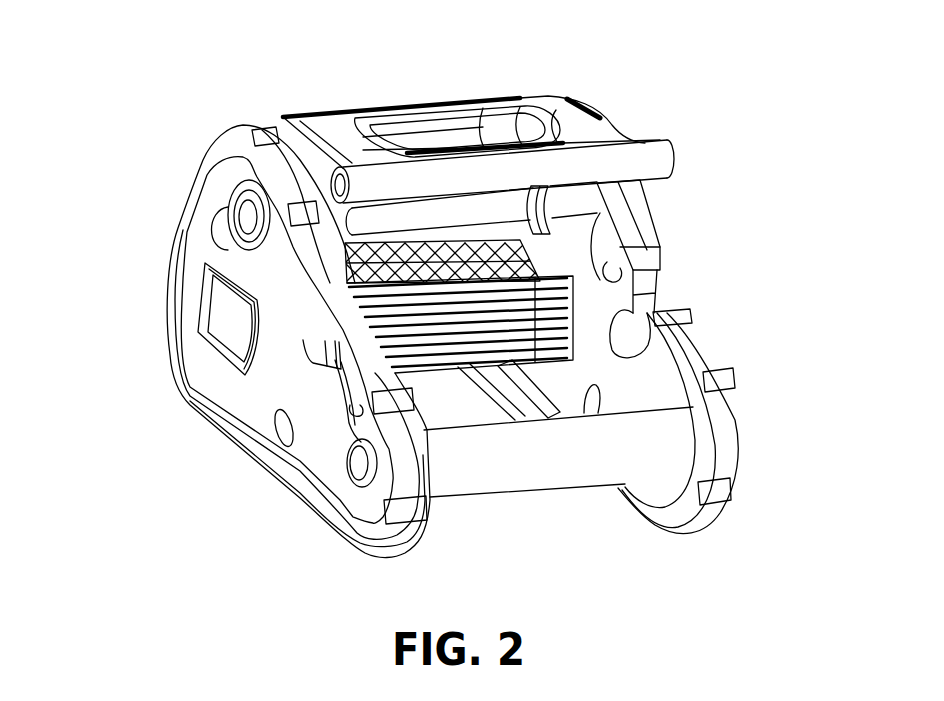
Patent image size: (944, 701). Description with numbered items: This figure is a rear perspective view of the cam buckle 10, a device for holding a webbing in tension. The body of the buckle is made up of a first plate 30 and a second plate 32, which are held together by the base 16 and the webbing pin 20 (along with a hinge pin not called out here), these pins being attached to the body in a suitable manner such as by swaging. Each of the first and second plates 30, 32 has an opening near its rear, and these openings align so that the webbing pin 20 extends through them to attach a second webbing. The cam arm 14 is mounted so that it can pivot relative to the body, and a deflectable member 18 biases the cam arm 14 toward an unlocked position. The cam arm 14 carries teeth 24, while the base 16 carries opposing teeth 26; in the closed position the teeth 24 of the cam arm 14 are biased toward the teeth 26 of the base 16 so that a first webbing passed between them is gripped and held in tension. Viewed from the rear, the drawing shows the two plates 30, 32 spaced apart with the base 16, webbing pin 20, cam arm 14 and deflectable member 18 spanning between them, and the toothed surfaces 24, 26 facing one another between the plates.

The cam buckle 10 is at (724, 113).
The cam arm 14 is at (555, 110).
The base 16 is at (227, 323).
The deflectable member 18 is at (543, 217).
The webbing pin 20 is at (573, 468).
The teeth of the cam arm 24 is at (507, 255).
The teeth of the base 26 is at (533, 278).
The first plate 30 is at (260, 408).
The second plate 32 is at (623, 390).